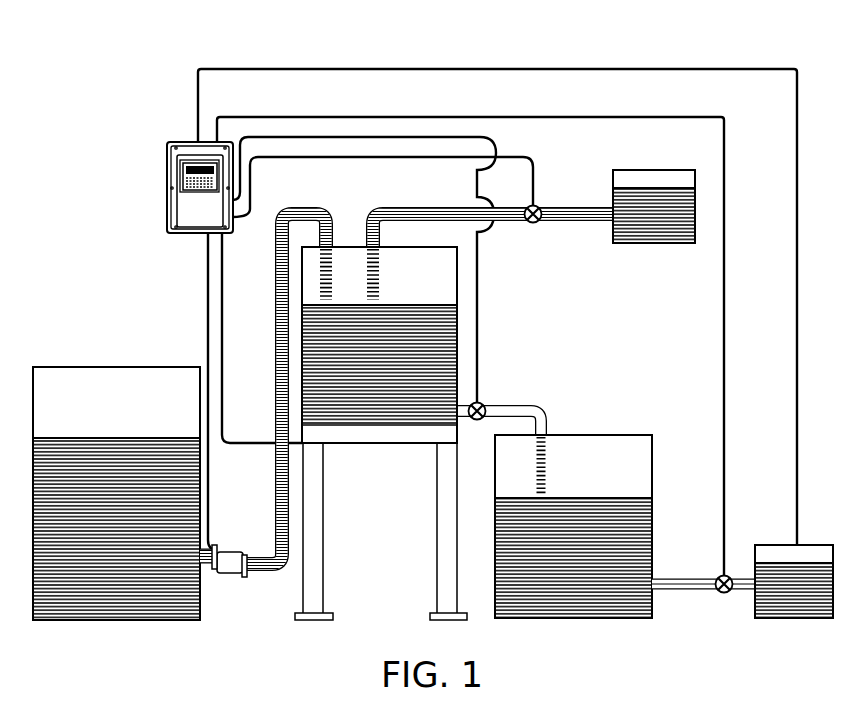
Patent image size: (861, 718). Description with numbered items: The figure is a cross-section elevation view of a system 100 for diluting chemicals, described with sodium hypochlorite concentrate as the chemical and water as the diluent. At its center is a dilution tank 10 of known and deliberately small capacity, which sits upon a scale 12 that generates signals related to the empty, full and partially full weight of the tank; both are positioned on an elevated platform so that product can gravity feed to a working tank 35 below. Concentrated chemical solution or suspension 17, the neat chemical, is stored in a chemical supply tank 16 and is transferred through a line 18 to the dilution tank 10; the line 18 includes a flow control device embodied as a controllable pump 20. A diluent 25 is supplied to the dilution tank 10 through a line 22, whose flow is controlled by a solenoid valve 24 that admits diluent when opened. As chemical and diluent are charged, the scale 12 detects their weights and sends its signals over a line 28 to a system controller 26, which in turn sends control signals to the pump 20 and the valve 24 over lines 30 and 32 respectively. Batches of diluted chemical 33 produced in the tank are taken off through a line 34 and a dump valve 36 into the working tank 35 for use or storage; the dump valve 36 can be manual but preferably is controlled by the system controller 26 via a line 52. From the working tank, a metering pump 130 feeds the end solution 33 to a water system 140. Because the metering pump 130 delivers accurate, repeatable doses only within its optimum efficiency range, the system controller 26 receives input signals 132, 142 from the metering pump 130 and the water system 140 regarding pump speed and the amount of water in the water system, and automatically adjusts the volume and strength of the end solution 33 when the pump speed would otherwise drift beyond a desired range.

The dilution tank 10 is at (457, 341).
The scale 12 is at (430, 433).
The chemical supply tank 16 is at (175, 367).
The concentrated chemical solution or suspension 17 is at (58, 598).
The line 18 is at (275, 307).
The controllable pump 20 is at (225, 573).
The line 22 is at (405, 207).
The solenoid valve 24 is at (538, 222).
The diluent 25 is at (647, 217).
The system controller 26 is at (185, 142).
The line 28 is at (223, 390).
The line 30 is at (208, 327).
The line 32 is at (392, 156).
The diluted chemical 33 is at (637, 548).
The line 34 is at (547, 414).
The working tank 35 is at (633, 485).
The dump valve 36 is at (485, 402).
The line 52 is at (305, 136).
The system 100 is at (258, 636).
The metering pump 130 is at (724, 593).
The input signal 132 is at (724, 327).
The water system 140 is at (787, 595).
The input signal 142 is at (597, 69).